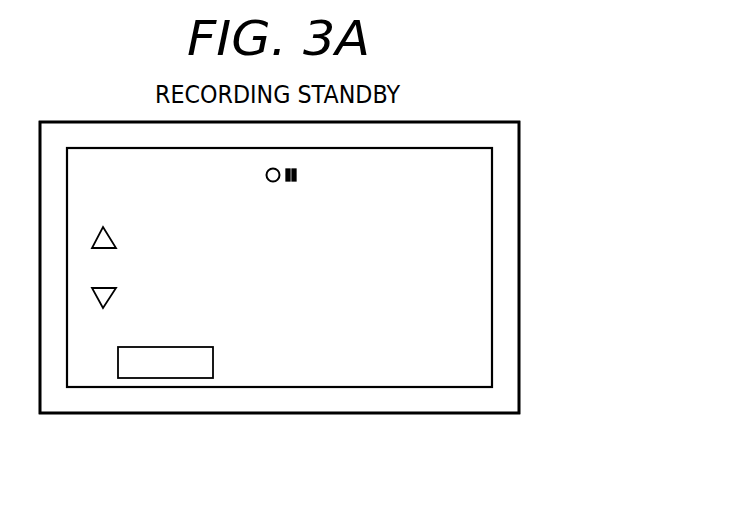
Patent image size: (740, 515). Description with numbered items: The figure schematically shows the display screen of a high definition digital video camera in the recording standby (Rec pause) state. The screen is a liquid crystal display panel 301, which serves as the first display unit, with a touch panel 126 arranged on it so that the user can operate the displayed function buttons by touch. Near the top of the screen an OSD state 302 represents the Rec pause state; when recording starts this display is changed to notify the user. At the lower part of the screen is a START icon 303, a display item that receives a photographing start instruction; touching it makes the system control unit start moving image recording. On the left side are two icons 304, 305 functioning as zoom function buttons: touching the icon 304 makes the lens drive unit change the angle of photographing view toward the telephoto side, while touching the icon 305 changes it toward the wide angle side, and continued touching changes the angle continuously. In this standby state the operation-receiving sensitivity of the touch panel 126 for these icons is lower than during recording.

The liquid crystal display panel 301 is at (502, 137).
The touch panel 126 is at (279, 267).
The OSD state 302 is at (280, 187).
The START icon 303 is at (193, 347).
The icon 304 is at (113, 234).
The icon 305 is at (105, 283).